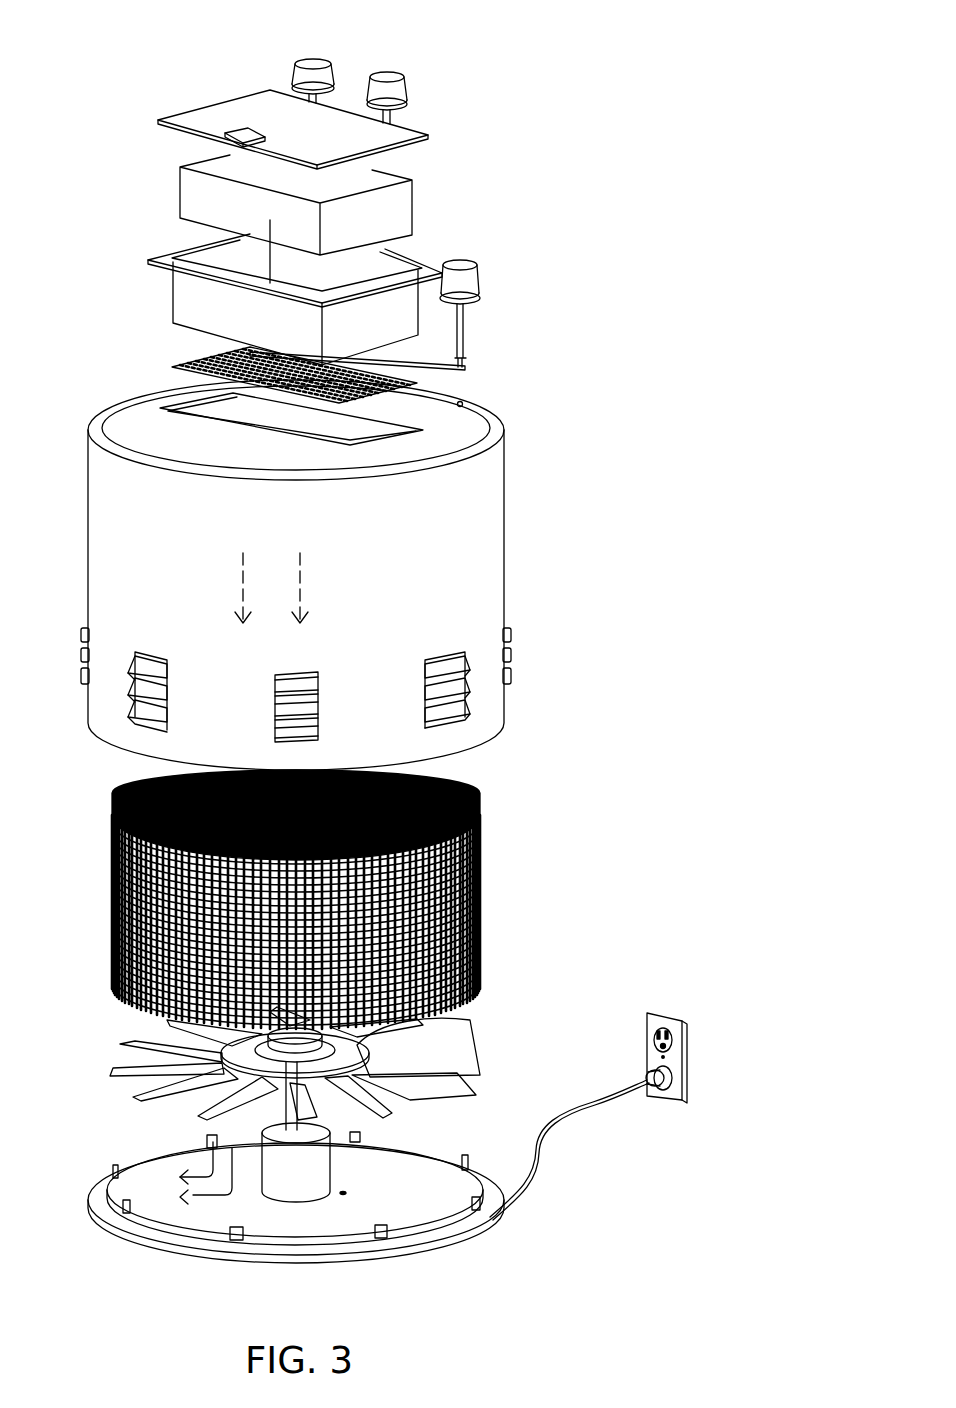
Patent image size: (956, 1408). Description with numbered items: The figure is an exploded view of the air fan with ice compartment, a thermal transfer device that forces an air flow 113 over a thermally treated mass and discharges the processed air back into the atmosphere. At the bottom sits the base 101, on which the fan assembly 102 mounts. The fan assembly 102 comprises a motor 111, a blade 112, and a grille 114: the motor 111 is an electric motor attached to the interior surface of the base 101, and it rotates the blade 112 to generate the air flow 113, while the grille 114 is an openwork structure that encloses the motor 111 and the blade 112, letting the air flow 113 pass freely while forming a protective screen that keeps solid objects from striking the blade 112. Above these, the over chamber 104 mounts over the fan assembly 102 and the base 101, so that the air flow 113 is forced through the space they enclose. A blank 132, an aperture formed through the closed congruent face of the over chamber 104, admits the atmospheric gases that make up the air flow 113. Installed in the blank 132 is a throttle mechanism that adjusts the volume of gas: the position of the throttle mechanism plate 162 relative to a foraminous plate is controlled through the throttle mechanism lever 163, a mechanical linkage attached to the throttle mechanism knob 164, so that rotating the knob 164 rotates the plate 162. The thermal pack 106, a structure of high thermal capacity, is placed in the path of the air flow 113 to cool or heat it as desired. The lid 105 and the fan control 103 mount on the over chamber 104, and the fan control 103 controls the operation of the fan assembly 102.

The base 101 is at (443, 1247).
The fan assembly 102 is at (662, 908).
The fan control 103 is at (453, 242).
The over chamber 104 is at (505, 573).
The lid 105 is at (250, 107).
The thermal pack 106 is at (178, 183).
The motor 111 is at (333, 1165).
The blade 112 is at (480, 1020).
The air flow 113 is at (303, 583).
The grille 114 is at (480, 908).
The blank 132 is at (435, 425).
The throttle mechanism plate 162 is at (172, 367).
The throttle mechanism lever 163 is at (425, 352).
The throttle mechanism knob 164 is at (480, 277).